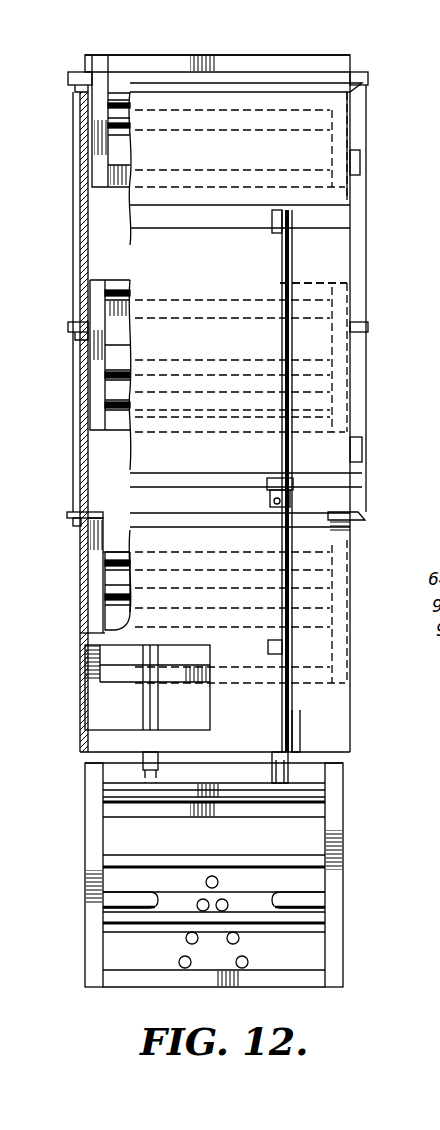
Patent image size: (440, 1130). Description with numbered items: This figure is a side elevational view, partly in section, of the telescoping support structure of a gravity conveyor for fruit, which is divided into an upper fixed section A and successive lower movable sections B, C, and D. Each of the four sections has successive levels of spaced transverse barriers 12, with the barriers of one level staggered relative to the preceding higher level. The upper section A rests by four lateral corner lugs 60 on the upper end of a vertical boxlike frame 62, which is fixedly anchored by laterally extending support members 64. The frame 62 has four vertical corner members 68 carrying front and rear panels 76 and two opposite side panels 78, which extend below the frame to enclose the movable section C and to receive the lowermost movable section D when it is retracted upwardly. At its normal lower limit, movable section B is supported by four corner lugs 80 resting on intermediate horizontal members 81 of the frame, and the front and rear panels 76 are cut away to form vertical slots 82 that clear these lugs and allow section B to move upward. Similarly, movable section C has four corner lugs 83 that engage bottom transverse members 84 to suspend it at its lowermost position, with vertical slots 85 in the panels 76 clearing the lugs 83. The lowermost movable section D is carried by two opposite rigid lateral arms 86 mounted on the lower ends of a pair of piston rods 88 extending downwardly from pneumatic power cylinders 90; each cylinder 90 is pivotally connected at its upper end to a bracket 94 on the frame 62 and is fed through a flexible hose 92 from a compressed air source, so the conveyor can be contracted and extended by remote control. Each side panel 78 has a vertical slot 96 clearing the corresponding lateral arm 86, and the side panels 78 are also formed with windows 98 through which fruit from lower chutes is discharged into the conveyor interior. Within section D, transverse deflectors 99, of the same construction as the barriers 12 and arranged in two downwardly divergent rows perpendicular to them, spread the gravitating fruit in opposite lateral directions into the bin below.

The transverse barriers 12 is at (110, 99).
The lateral corner lugs 60 is at (68, 80).
The boxlike frame 62 is at (368, 122).
The support members 64 is at (362, 163).
The vertical corner members 68 is at (76, 262).
The front and rear panels 76 is at (92, 165).
The side panels 78 is at (370, 700).
The corner lugs 80 is at (68, 330).
The intermediate horizontal members 81 is at (76, 338).
The vertical slots 82 is at (80, 243).
The corner lugs 83 is at (72, 510).
The bottom transverse members 84 is at (72, 527).
The vertical slots 85 is at (84, 460).
The lateral arms 86 is at (272, 765).
The piston rods 88 is at (283, 712).
The pneumatic power cylinders 90 is at (293, 252).
The flexible hose 92 is at (270, 503).
The bracket 94 is at (280, 228).
The vertical slot 96 is at (143, 697).
The windows 98 is at (278, 480).
The transverse deflectors 99 is at (228, 905).
The upper fixed section A is at (246, 53).
The movable section B is at (326, 283).
The movable section C is at (106, 562).
The lowermost movable section D is at (345, 871).